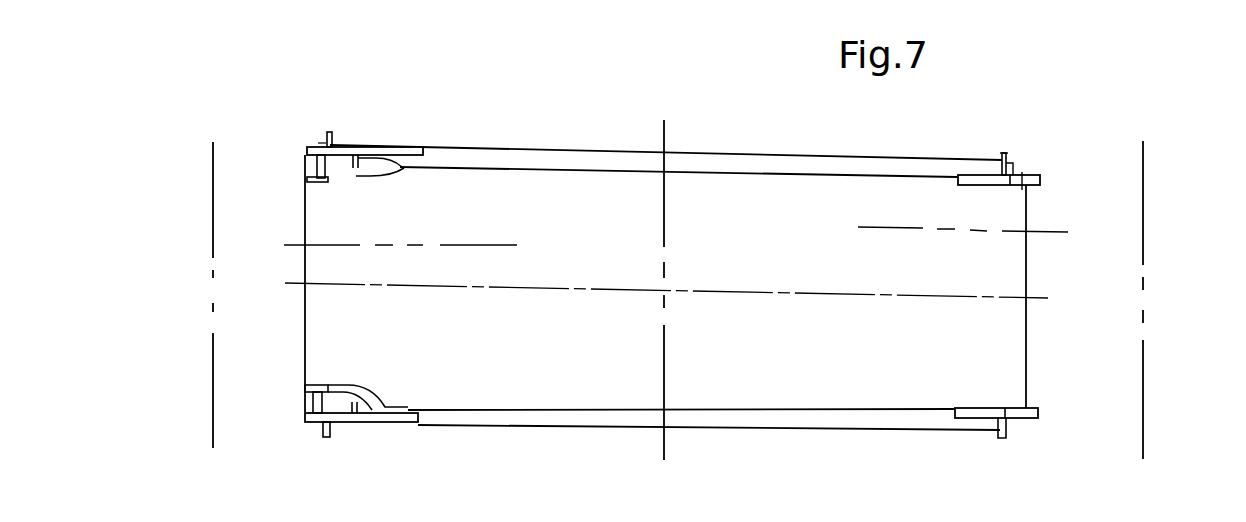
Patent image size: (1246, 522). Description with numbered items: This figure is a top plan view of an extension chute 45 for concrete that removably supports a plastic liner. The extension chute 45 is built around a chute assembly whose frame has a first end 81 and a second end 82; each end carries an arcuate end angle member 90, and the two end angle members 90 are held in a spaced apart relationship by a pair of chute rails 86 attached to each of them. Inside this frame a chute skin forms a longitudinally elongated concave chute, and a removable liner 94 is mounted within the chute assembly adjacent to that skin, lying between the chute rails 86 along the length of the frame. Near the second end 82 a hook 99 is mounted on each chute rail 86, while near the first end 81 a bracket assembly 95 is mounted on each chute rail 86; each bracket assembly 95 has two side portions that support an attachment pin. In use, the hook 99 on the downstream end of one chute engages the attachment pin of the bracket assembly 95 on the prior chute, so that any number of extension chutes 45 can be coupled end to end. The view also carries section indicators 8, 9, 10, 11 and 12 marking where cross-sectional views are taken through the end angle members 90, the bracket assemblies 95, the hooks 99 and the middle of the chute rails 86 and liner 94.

The extension chute 45 is at (590, 120).
The first end 81 is at (272, 320).
The second end 82 is at (1048, 343).
The chute rail 86 is at (795, 165).
The end angle member 90 is at (327, 145).
The removable liner 94 is at (850, 268).
The bracket assembly 95 is at (354, 147).
The hook 99 is at (983, 175).
The section line 8- 8 is at (1128, 459).
The section line 9- 9 is at (228, 448).
The section line 10- 10 is at (517, 235).
The section line 11- 11 is at (1068, 213).
The section line 12- 12 is at (679, 458).